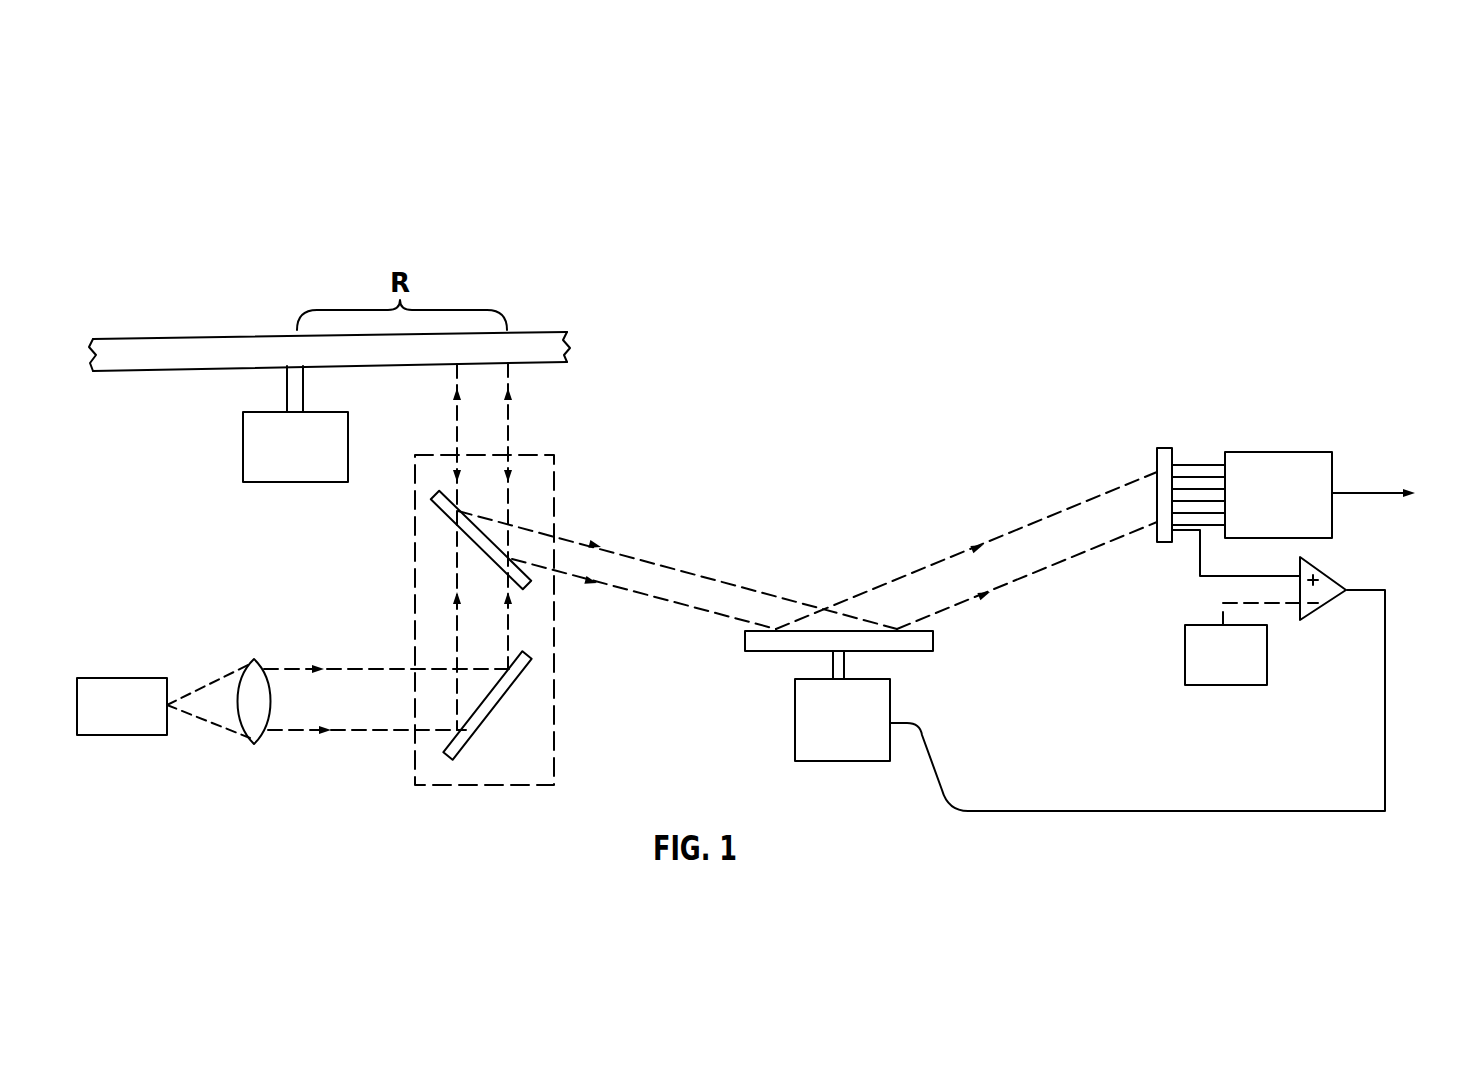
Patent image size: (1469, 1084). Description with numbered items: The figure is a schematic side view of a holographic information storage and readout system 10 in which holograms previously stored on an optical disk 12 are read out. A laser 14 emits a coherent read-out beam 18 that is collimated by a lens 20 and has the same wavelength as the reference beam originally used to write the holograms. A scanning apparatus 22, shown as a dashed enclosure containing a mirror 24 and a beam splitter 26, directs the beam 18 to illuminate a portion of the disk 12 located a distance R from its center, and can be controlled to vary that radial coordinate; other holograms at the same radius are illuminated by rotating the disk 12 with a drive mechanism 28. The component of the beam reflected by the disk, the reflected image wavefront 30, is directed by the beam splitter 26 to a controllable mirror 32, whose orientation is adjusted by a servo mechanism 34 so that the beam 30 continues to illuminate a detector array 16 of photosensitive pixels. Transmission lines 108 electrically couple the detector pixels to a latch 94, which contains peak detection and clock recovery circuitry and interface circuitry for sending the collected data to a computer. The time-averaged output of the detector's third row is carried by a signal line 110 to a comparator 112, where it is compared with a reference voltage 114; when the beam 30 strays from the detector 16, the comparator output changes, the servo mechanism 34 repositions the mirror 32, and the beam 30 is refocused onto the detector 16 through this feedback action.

The information storage and readout system 10 is at (280, 225).
The optical disk 12 is at (138, 339).
The laser 14 is at (145, 736).
The detector array 16 is at (1163, 447).
The read-out beam 18 is at (369, 763).
The lens 20 is at (257, 744).
The scanning apparatus 22 is at (480, 792).
The mirror 24 is at (558, 627).
The beam splitter 26 is at (437, 505).
The drive mechanism 28 is at (243, 444).
The reflected image wavefront 30 is at (510, 497).
The controllable mirror 32 is at (919, 652).
The servo mechanism 34 is at (795, 722).
The latch 94 is at (1285, 452).
The transmission lines 108 is at (1199, 455).
The signal line 110 is at (1198, 558).
The comparator 112 is at (1309, 620).
The reference voltage 114 is at (1235, 684).